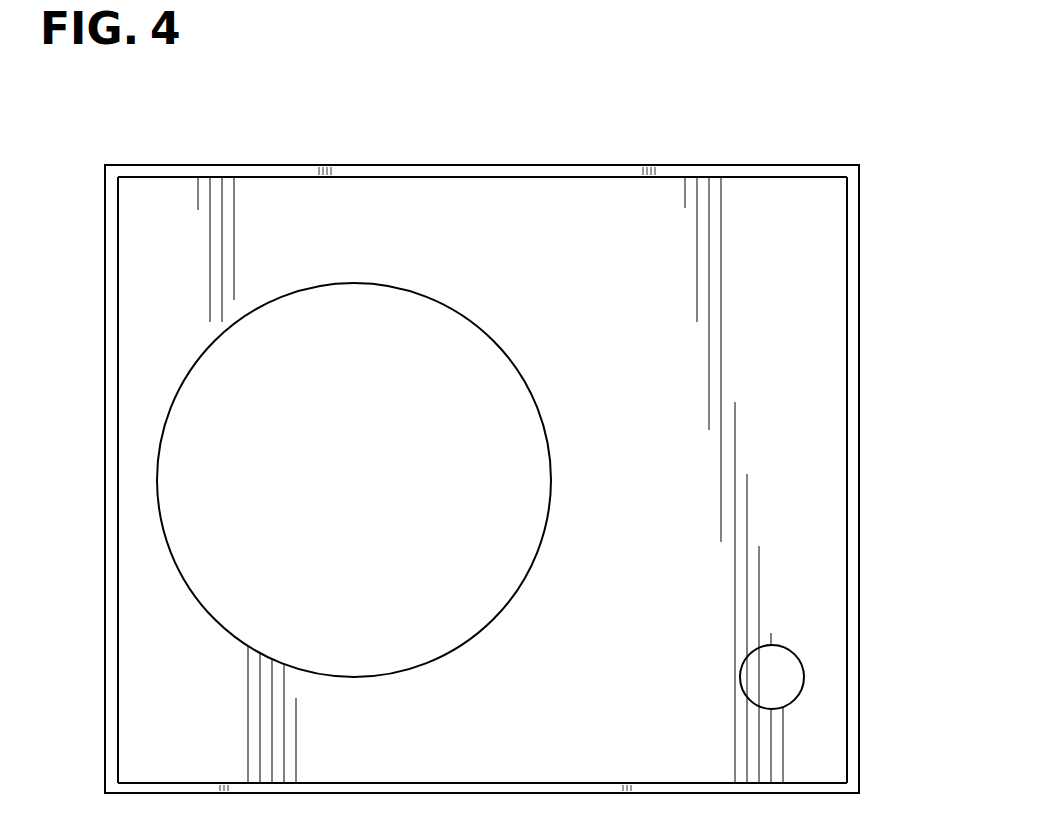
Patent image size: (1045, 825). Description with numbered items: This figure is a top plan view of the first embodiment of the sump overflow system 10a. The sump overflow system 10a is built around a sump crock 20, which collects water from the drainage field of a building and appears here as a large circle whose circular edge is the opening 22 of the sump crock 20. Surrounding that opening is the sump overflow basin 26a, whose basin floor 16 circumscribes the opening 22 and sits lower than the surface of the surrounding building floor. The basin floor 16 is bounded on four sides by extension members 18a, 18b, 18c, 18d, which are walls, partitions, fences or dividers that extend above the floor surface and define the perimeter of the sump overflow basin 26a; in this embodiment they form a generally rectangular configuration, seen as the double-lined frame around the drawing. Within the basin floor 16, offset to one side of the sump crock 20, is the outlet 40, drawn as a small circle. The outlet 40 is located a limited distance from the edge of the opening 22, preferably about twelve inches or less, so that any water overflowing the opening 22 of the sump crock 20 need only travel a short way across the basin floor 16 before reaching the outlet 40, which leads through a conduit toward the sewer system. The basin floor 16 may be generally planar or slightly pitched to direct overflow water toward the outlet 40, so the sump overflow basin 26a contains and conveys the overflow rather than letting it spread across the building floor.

The sump overflow system 10a is at (578, 111).
The basin floor 16 is at (482, 480).
The extension member 18a is at (503, 782).
The extension member 18b is at (119, 659).
The extension member 18c is at (440, 178).
The extension member 18d is at (846, 412).
The sump crock 20 is at (354, 447).
The opening of the sump crock 22 is at (355, 284).
The sump overflow basin 26a is at (676, 200).
The outlet 40 is at (804, 668).